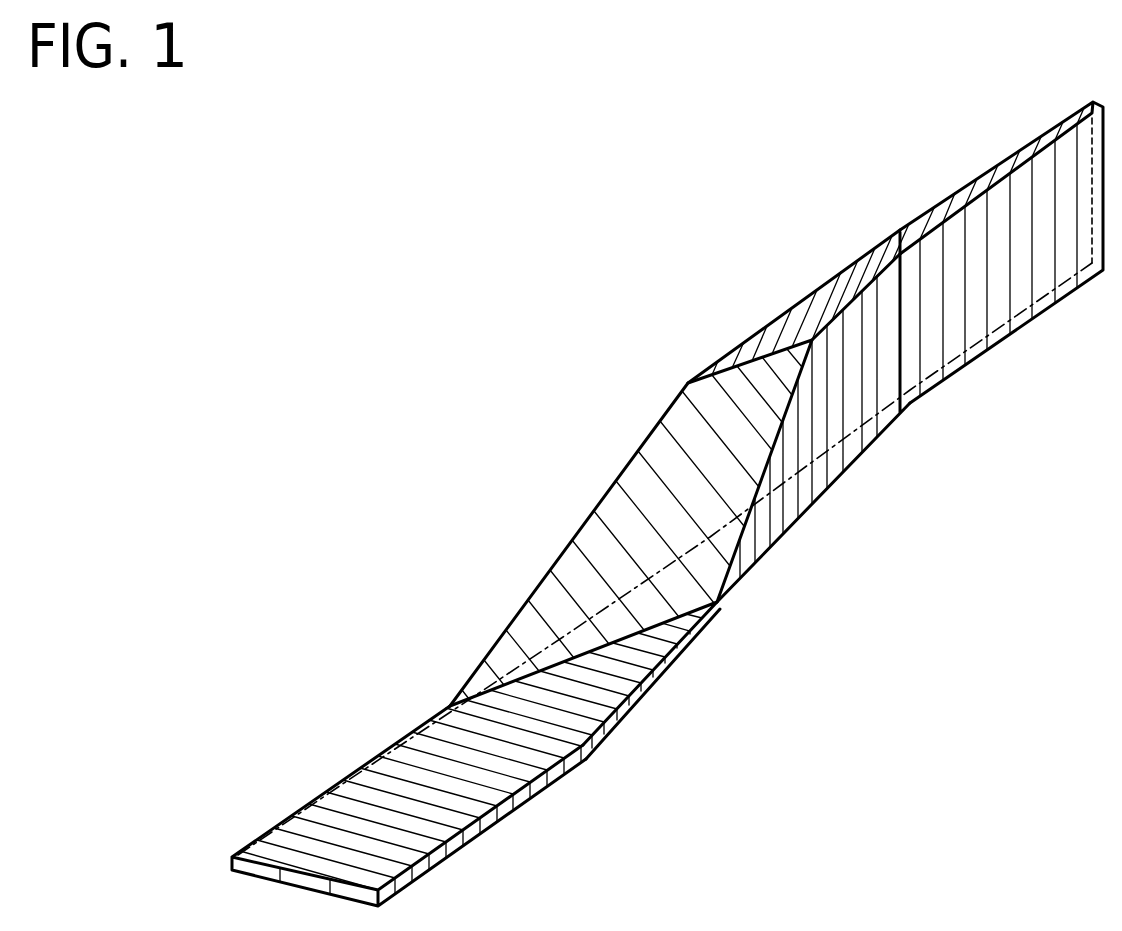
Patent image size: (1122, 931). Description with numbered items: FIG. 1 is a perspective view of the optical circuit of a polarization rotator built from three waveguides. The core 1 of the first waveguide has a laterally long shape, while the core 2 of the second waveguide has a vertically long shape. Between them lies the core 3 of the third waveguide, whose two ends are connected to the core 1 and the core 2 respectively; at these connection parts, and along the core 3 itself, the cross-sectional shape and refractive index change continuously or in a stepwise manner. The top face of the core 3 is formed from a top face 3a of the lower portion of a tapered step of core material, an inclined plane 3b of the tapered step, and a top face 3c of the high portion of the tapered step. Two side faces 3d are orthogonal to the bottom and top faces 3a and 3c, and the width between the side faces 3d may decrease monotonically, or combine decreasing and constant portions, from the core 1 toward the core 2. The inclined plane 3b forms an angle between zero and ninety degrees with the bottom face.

The core of first waveguide 1 is at (342, 775).
The core of second waveguide 2 is at (995, 239).
The core of third waveguide 3 is at (587, 510).
The top face of core of third waveguide, formed of lower portion of tapered step 3a is at (603, 690).
The top face of core of third waveguide, formed of slope with tapered step 3b is at (693, 495).
The top face of core of third waveguide, formed from higher portion of tapered step 3c is at (787, 321).
The side face of core of third waveguide 3d is at (833, 402).